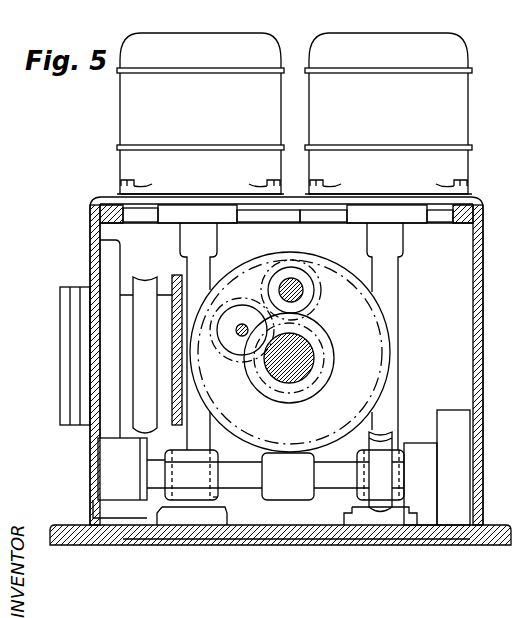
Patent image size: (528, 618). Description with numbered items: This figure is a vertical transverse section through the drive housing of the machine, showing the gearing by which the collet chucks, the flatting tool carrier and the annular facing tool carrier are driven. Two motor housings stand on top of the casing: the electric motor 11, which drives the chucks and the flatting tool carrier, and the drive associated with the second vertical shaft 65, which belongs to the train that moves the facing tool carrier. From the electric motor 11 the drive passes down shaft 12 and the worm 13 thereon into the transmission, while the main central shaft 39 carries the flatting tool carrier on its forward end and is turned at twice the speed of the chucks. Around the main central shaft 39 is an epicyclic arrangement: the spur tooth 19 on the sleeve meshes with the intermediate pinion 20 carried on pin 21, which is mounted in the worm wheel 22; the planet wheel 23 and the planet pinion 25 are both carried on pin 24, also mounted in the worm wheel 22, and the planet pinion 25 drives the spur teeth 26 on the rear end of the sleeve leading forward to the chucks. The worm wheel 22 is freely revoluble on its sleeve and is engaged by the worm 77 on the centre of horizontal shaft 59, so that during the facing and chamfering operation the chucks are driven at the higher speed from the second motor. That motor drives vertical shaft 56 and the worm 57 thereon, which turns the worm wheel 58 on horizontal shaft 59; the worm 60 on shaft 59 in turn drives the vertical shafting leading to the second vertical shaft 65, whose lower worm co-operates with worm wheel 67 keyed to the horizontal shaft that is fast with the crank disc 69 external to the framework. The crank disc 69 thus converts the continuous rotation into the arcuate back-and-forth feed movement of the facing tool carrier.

The electric motor 11 is at (127, 114).
The second vertical shaft 65 is at (464, 128).
The worm wheel 22 is at (388, 336).
The crank disc 69 is at (67, 343).
The worm wheel 67 is at (147, 395).
The shaft 12 is at (203, 272).
The vertical shaft 56 is at (391, 283).
The intermediate pinion 20 is at (240, 352).
The pin 21 is at (242, 324).
The planet wheel 23 is at (321, 273).
The pin 24 is at (292, 288).
The planet pinion 25 is at (316, 297).
The spur tooth 19 is at (333, 375).
The spur teeth 26 is at (331, 347).
The main central shaft 39 is at (297, 361).
The worm 60 is at (190, 490).
The worm 13 is at (213, 497).
The horizontal shaft 59 is at (327, 478).
The worm 77 is at (284, 487).
The worm wheel 58 is at (377, 513).
The worm 57 is at (397, 450).